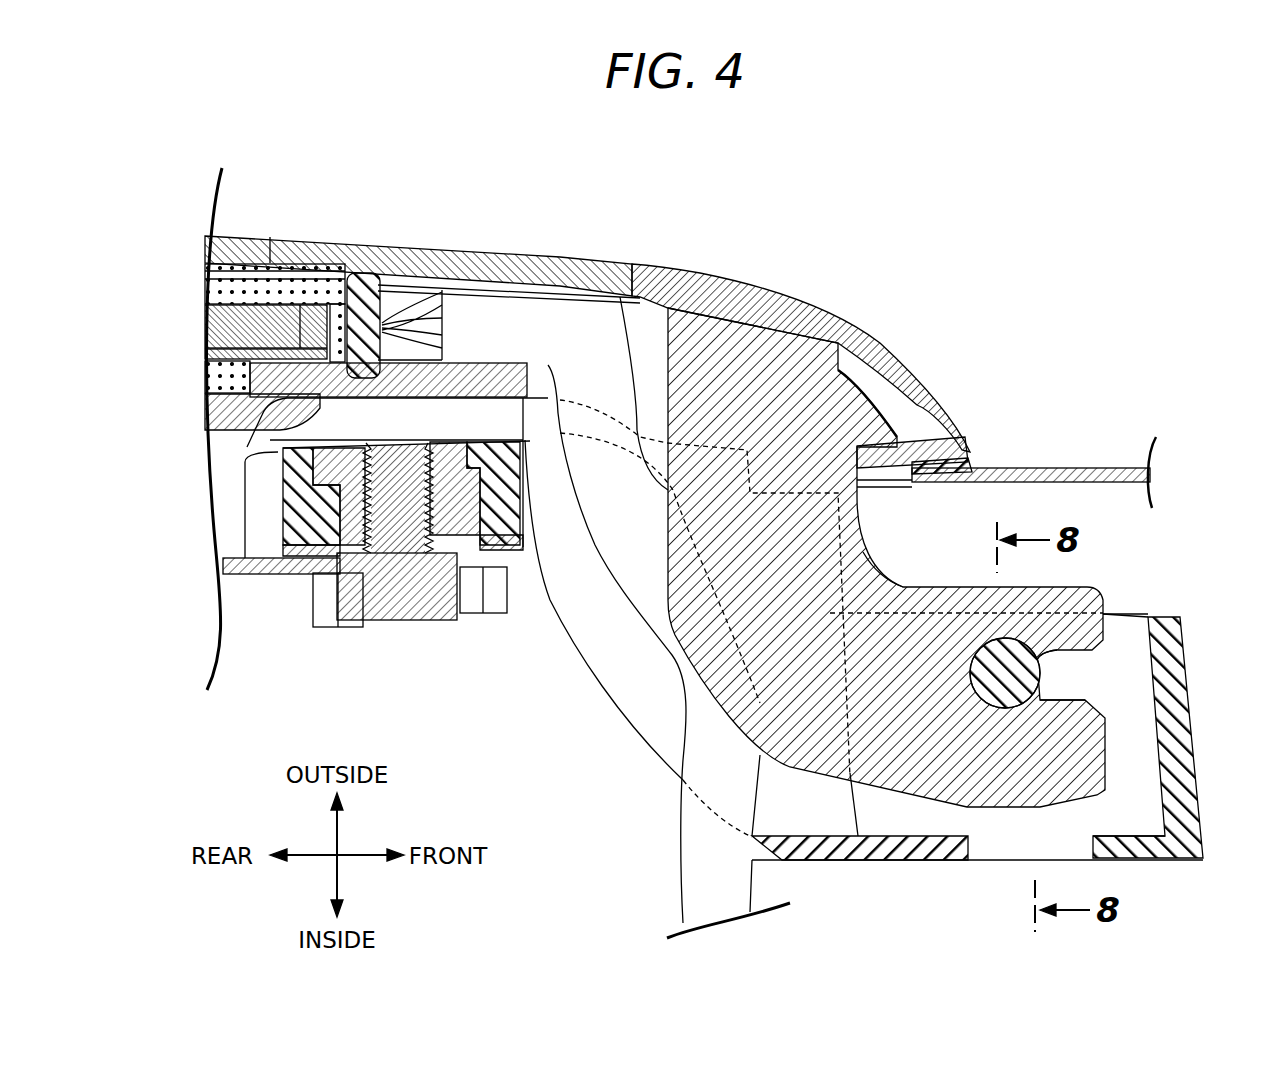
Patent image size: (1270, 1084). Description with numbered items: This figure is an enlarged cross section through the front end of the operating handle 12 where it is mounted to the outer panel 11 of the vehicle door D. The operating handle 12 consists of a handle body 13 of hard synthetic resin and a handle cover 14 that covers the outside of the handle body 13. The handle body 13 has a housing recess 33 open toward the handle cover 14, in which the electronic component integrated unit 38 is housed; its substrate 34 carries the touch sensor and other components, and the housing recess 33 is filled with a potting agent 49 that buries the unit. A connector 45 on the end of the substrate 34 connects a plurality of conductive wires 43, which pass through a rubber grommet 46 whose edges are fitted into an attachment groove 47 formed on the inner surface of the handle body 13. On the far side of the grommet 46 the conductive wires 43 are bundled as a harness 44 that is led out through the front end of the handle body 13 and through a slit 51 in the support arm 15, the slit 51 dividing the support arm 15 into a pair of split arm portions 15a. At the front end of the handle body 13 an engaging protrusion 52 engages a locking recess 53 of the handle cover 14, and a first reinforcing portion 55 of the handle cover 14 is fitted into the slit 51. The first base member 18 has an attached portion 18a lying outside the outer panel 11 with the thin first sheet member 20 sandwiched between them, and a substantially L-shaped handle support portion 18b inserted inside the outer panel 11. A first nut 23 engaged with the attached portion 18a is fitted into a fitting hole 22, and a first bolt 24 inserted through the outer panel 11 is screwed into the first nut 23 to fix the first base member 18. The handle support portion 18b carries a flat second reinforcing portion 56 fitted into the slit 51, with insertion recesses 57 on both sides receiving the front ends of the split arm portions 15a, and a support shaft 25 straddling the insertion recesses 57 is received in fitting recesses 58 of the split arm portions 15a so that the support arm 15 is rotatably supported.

The outer panel 11 is at (1060, 468).
The operating handle 12 is at (378, 143).
The handle body 13 is at (305, 370).
The handle cover 14 is at (372, 264).
The support arm 15 is at (922, 808).
The split arm portion 15a is at (890, 578).
The first base member 18 is at (1200, 650).
The attached portion 18a is at (290, 518).
The handle support portion 18b is at (1188, 773).
The first sheet member 20 is at (950, 460).
The fitting hole 22 is at (432, 560).
The first nut 23 is at (460, 428).
The first bolt 24 is at (470, 600).
The support shaft 25 is at (1043, 670).
The housing recess 33 is at (213, 382).
The substrate 34 is at (210, 408).
The electronic component integrated unit 38 is at (270, 290).
The conductive wire 43 is at (433, 307).
The harness 44 is at (668, 508).
The connector 45 is at (207, 322).
The grommet 46 is at (390, 283).
The attachment groove 47 is at (367, 380).
The potting agent 49 is at (240, 290).
The slit 51 is at (620, 663).
The engaging protrusion 52 is at (872, 402).
The locking recess 53 is at (890, 437).
The first reinforcing portion 55 is at (650, 393).
The second reinforcing portion 56 is at (1130, 612).
The insertion recess 57 is at (1133, 787).
The fitting recess 58 is at (1068, 697).
The vehicle door D is at (1115, 458).